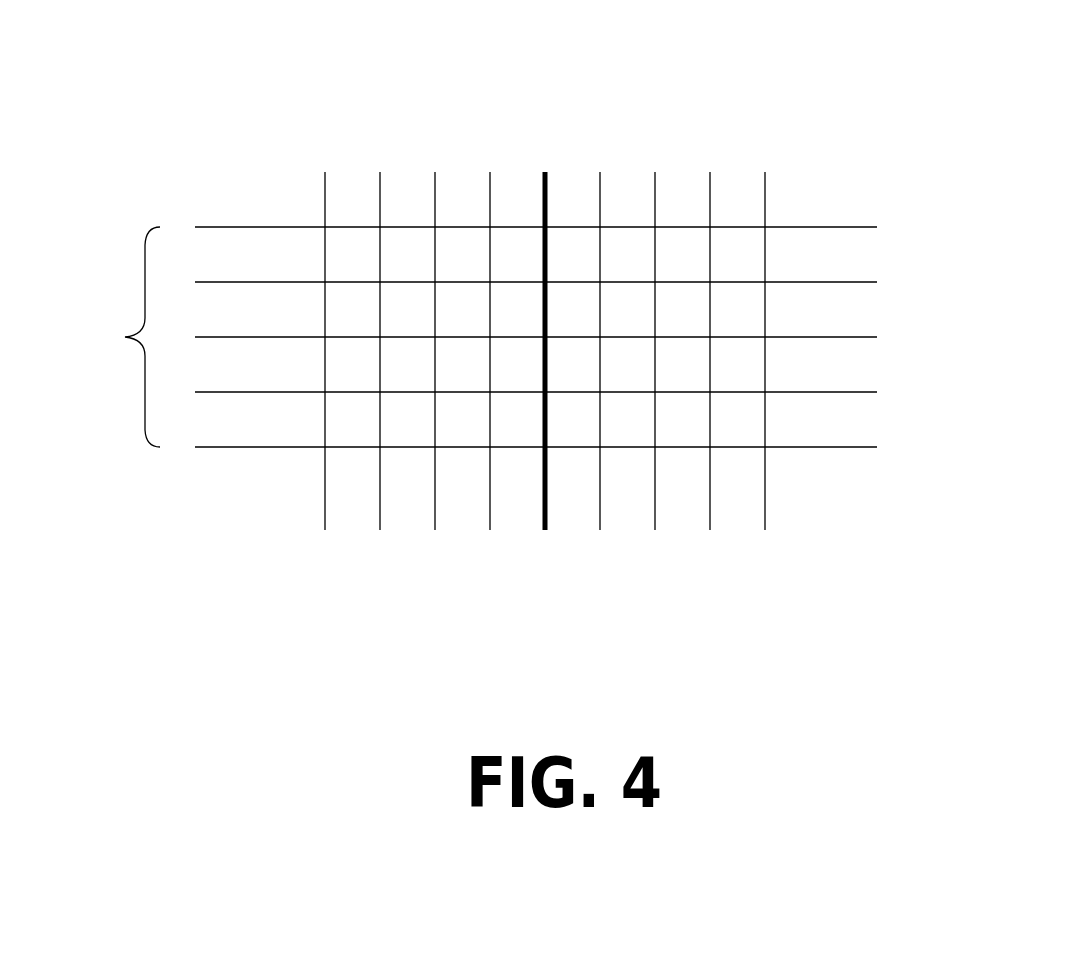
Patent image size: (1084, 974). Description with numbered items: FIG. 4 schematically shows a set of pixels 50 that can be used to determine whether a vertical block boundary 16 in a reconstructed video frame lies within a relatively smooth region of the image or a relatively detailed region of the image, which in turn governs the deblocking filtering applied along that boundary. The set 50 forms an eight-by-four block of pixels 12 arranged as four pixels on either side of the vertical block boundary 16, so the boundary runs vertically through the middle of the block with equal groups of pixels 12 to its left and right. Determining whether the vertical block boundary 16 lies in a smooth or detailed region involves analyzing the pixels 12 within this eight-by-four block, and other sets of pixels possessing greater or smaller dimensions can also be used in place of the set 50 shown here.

The pixels 12 is at (573, 317).
The vertical block boundary 16 is at (543, 197).
The set of pixels 50 is at (107, 337).